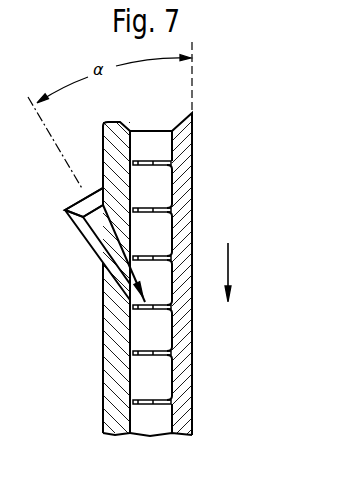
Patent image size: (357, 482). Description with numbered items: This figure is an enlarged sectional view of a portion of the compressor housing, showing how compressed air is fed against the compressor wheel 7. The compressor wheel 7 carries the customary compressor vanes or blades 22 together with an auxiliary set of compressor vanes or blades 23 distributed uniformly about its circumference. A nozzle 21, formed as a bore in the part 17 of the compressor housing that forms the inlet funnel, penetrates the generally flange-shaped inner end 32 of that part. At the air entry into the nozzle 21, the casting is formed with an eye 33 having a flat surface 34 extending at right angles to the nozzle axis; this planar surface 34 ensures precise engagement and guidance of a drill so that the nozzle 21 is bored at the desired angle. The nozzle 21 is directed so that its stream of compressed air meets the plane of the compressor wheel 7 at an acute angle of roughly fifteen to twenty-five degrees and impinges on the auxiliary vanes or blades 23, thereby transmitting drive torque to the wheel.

The compressor wheel 7 is at (192, 204).
The part forming inlet funnel of compressor housing 17 is at (103, 345).
The nozzle 21 is at (100, 265).
The compressor vanes or blades 22 is at (153, 160).
The auxiliary compressor vanes or blades 23 is at (150, 205).
The inner end 32 is at (117, 388).
The eye 33 is at (72, 236).
The flat surface 34 is at (83, 195).